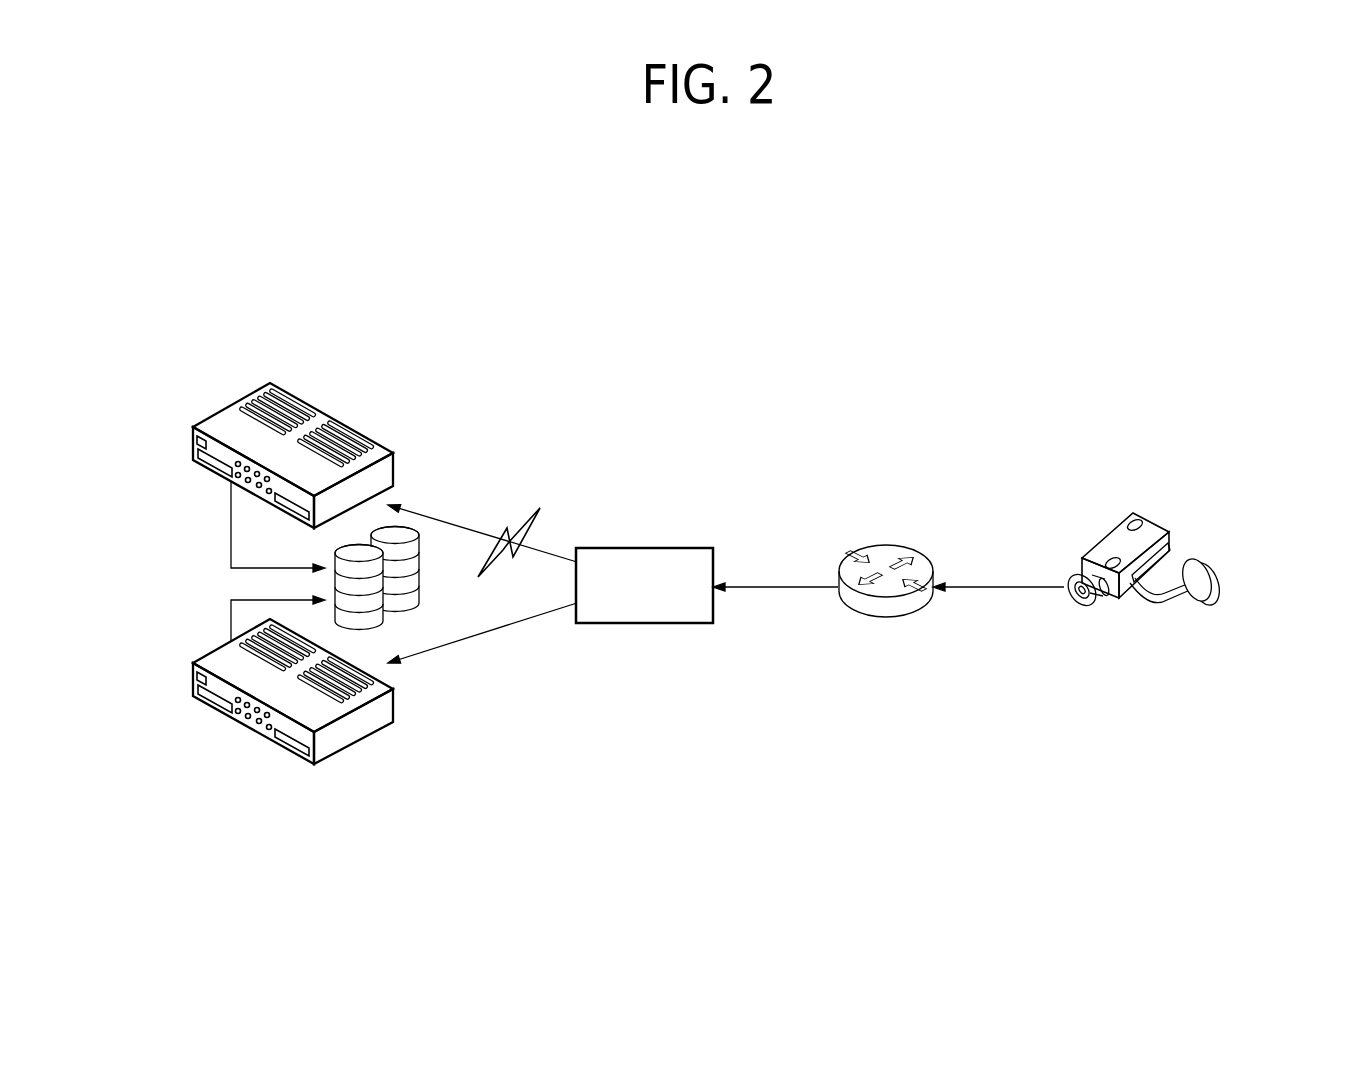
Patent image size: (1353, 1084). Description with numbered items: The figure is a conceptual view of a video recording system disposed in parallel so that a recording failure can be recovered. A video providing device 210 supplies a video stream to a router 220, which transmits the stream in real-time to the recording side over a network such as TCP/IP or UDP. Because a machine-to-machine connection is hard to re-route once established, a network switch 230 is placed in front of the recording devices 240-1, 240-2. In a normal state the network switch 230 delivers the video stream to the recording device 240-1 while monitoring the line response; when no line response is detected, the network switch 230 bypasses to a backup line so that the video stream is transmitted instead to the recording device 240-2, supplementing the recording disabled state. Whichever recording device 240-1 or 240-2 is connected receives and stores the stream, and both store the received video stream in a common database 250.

The video providing device 210 is at (1118, 540).
The router 220 is at (884, 552).
The network switch 230 is at (677, 548).
The recording device 240-1 is at (222, 423).
The recording device 240-2 is at (213, 660).
The common database 250 is at (419, 595).